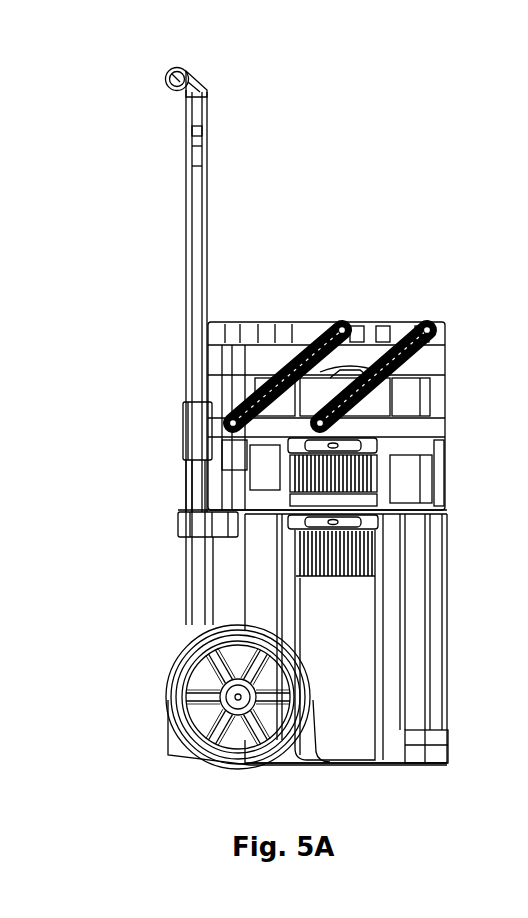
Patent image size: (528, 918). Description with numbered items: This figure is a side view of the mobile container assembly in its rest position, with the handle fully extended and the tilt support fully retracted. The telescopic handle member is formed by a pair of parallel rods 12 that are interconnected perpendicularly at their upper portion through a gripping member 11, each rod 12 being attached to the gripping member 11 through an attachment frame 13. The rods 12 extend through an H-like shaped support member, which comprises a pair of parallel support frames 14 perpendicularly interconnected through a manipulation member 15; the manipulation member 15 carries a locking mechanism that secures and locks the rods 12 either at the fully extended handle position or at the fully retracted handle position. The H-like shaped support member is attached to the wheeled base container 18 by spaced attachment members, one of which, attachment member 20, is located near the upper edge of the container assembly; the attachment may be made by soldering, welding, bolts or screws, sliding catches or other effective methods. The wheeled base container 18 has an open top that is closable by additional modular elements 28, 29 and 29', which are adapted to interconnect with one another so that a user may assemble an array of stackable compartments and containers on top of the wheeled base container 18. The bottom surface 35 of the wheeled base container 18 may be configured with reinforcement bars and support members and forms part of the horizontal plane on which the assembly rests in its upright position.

The gripping member 11 is at (166, 77).
The rods 12 is at (204, 252).
The attachment frame 13 is at (202, 90).
The support frames 14 is at (200, 488).
The manipulation member 15 is at (200, 428).
The wheeled base container 18 is at (425, 635).
The attachment member 20 is at (200, 527).
The modular element 28 is at (428, 472).
The modular element 29 is at (371, 377).
The modular element 29' is at (417, 377).
The bottom surface 35 is at (359, 764).